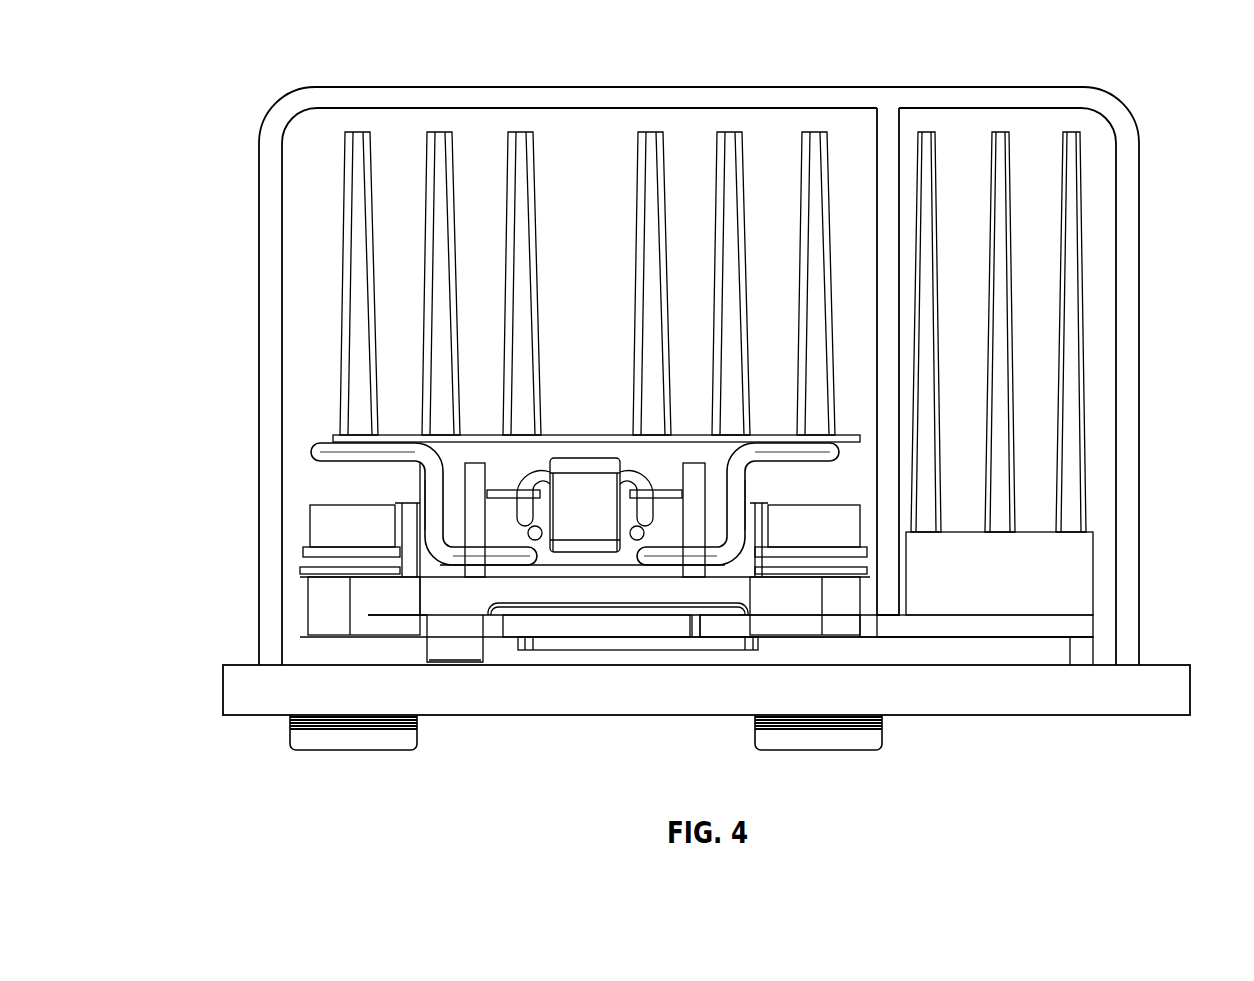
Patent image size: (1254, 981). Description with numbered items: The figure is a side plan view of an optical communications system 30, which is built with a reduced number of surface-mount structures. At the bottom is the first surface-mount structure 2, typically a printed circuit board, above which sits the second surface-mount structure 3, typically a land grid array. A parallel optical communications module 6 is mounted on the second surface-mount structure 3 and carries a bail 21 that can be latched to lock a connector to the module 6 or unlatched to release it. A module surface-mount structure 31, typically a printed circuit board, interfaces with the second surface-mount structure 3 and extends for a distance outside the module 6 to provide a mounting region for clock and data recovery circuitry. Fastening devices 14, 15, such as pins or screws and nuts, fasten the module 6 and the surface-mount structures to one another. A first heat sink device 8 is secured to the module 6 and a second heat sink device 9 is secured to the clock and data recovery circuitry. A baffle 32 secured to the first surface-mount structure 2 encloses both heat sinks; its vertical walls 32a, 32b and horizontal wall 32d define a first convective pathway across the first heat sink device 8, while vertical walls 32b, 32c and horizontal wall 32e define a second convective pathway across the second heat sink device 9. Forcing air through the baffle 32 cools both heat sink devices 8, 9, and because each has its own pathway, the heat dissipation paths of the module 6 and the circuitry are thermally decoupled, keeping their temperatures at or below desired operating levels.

The optical communications system 30 is at (233, 99).
The baffle 32 is at (700, 87).
The vertical wall 32a is at (275, 292).
The vertical wall 32b is at (883, 240).
The vertical wall 32c is at (1128, 257).
The horizontal wall 32d is at (620, 100).
The horizontal wall 32e is at (983, 98).
The first heat sink device 8 is at (521, 134).
The second heat sink device 9 is at (998, 133).
The bail 21 is at (327, 448).
The fastening device 15 is at (320, 533).
The parallel optical communications module 6 is at (320, 600).
The module surface-mount structure 31 is at (607, 623).
The second surface-mount structure 3 is at (695, 650).
The first surface-mount structure 2 is at (1180, 668).
The fastening device 14 is at (300, 735).